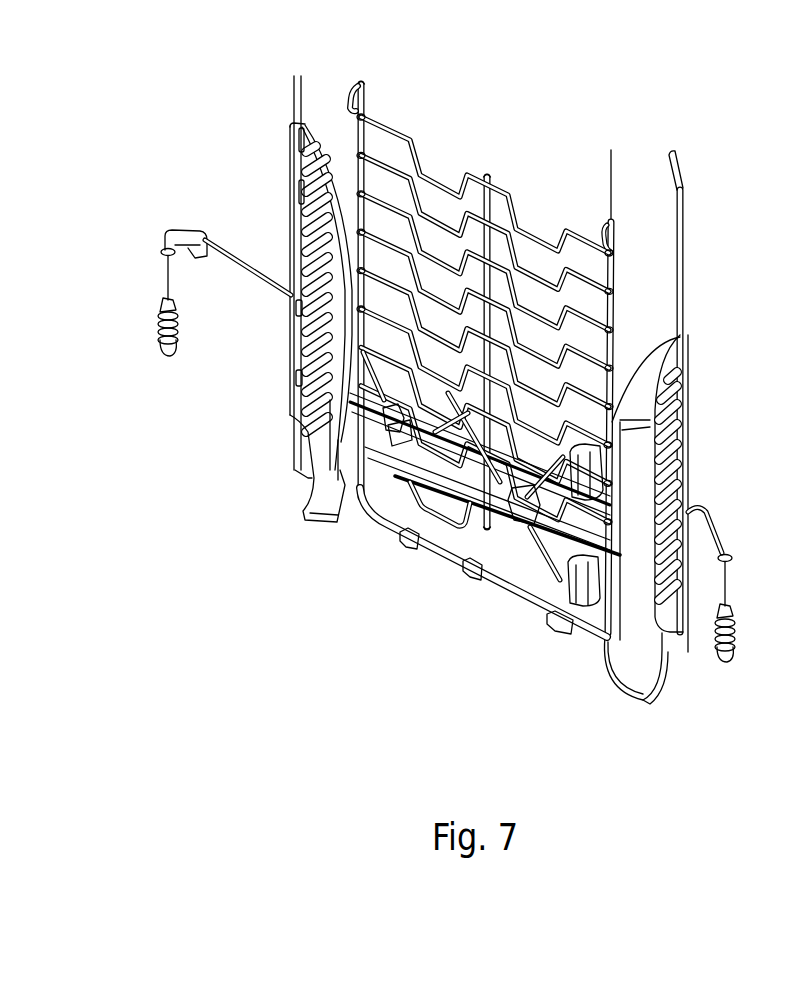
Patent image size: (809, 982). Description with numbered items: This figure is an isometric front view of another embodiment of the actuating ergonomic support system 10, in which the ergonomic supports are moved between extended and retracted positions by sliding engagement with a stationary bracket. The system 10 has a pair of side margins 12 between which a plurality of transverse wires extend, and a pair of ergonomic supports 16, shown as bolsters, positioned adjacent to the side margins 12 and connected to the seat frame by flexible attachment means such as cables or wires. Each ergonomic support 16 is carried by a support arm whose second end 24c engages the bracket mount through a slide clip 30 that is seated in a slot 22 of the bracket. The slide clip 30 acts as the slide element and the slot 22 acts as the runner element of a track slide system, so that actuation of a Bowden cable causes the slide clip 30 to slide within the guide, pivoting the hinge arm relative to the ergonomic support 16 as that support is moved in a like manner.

The actuating ergonomic support system 10 is at (515, 162).
The side margins 12 is at (343, 77).
The ergonomic supports 16 is at (280, 230).
The slot 22 is at (587, 540).
The second end of the support arm 24c is at (362, 478).
The slide clip 30 is at (400, 452).